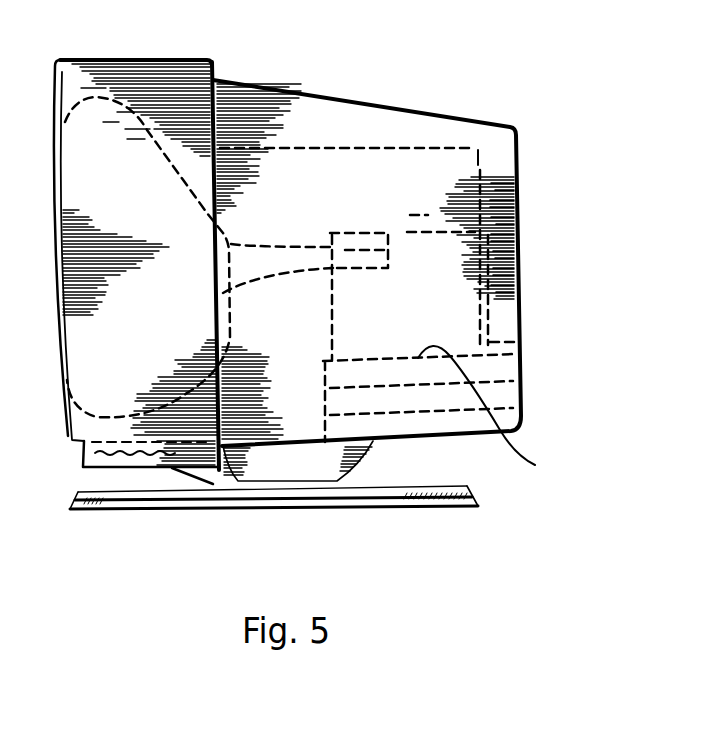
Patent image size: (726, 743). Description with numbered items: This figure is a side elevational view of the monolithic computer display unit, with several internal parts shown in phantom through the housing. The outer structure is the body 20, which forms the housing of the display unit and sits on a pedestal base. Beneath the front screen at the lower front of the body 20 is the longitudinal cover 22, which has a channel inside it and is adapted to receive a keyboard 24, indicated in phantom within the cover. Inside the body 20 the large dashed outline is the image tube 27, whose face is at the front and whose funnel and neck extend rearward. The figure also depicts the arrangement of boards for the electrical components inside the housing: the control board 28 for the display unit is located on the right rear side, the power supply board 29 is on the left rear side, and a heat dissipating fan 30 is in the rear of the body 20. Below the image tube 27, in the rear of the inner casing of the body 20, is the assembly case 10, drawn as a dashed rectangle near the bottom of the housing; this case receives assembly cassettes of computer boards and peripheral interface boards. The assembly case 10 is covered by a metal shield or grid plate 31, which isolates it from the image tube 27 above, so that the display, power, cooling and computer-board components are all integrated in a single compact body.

The assembly case 10 is at (500, 366).
The body 20 is at (207, 57).
The longitudinal cover 22 is at (12, 494).
The keyboard 24 is at (112, 462).
The image tube 27 is at (296, 247).
The control board 28 is at (452, 168).
The power supply board 29 is at (453, 255).
The heat dissipating fan 30 is at (522, 288).
The metal shield or grid plate 31 is at (494, 416).